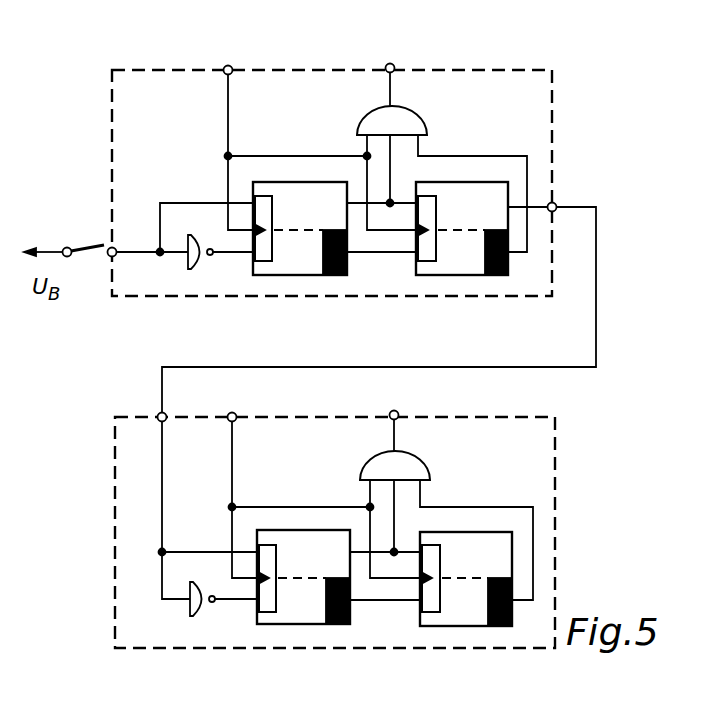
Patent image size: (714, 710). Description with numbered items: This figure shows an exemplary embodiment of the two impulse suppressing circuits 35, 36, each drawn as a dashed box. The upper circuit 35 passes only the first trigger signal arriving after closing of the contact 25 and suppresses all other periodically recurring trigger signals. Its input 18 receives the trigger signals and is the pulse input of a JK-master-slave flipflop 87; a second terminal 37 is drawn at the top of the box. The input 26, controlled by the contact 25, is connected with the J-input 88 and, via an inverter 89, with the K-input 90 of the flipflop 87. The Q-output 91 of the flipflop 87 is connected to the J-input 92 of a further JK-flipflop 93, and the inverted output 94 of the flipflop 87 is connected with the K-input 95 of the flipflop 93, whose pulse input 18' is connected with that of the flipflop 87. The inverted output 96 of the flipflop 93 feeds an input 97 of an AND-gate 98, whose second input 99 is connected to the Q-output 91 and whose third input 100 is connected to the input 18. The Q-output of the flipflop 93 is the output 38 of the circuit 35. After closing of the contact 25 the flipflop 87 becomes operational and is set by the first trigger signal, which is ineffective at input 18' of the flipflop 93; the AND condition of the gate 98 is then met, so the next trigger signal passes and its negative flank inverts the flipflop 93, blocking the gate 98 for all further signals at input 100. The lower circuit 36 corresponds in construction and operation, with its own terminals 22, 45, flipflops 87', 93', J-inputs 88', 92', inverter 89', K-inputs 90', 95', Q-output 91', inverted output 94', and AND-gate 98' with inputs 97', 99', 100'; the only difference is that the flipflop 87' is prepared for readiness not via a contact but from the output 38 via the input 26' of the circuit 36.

The input 18 is at (225, 126).
The input 18' is at (383, 204).
The clock pulse input terminal 22 is at (235, 413).
The contact 25 is at (80, 246).
The input 26 is at (148, 234).
The input 26' is at (145, 485).
The impulse suppressing circuit 35 is at (535, 124).
The impulse suppressing circuit 36 is at (538, 444).
The reset input terminal 37 is at (390, 63).
The output 38 is at (556, 202).
The reset input terminal 45 is at (398, 411).
The JK-master-slave flipflop 87 is at (300, 256).
The JK-flipflop 87' is at (296, 603).
The J-input 88 is at (208, 205).
The J-input 88' is at (209, 530).
The inverter 89 is at (172, 258).
The inverter 89' is at (170, 609).
The K-input 90 is at (230, 266).
The K-input 90' is at (234, 619).
The Q-output 91 is at (377, 171).
The Q-output 91' is at (387, 555).
The J-input 92 is at (410, 181).
The J-input 92' is at (388, 518).
The JK-flipflop 93 is at (462, 256).
The JK-flipflop 93' is at (466, 604).
The Q-bar output 94 is at (369, 256).
The Q-bar output 94' is at (373, 607).
The K-input 95 is at (400, 267).
The K-input 95' is at (404, 618).
The Q-bar output 96 is at (506, 262).
The input 97 is at (422, 125).
The input 97' is at (428, 467).
The AND-gate 98 is at (405, 106).
The AND-gate 98' is at (366, 455).
The second input 99 is at (472, 191).
The second input 99' is at (476, 540).
The third input 100 is at (299, 143).
The third input 100' is at (303, 495).